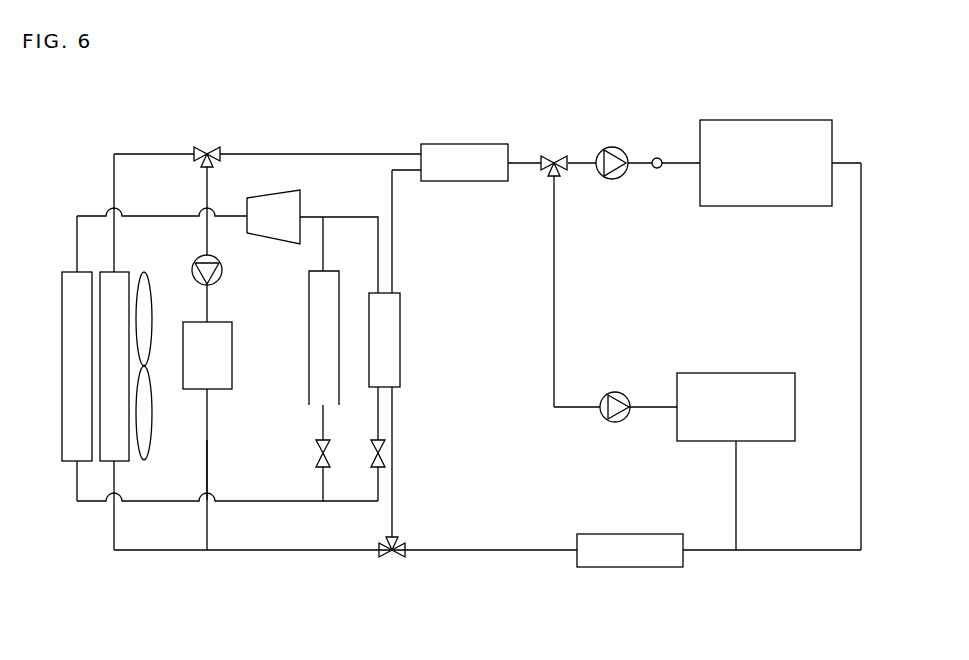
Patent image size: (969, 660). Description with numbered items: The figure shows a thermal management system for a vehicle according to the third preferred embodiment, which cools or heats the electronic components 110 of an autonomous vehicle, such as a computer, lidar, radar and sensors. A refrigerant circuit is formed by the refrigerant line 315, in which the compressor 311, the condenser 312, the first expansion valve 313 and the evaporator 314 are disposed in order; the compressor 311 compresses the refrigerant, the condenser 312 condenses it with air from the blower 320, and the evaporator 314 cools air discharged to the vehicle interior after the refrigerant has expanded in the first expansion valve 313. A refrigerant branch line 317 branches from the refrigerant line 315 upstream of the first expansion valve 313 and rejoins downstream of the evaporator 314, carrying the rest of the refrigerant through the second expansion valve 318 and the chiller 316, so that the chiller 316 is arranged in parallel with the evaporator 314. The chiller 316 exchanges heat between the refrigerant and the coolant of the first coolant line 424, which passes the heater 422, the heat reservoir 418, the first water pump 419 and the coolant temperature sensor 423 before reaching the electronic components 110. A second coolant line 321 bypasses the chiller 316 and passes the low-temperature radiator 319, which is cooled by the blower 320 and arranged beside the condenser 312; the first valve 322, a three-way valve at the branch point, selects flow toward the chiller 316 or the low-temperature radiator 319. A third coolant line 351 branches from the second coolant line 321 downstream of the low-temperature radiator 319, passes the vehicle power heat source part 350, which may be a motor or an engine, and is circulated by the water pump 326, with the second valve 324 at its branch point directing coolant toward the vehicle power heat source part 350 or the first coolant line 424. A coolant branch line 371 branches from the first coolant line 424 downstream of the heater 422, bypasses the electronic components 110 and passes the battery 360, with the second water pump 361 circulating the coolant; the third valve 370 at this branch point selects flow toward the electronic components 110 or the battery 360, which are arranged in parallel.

The electronic components 110 is at (770, 120).
The compressor 311 is at (272, 190).
The condenser 312 is at (68, 461).
The first expansion valve 313 is at (316, 450).
The evaporator 314 is at (309, 340).
The refrigerant line 315 is at (160, 216).
The chiller 316 is at (401, 340).
The refrigerant branch line 317 is at (341, 501).
The second expansion valve 318 is at (371, 455).
The low-temperature radiator 319 is at (125, 461).
The blower 320 is at (151, 455).
The second coolant line 321 is at (247, 550).
The first valve 322 is at (393, 558).
The second valve 324 is at (213, 148).
The water pump 326 is at (216, 281).
The vehicle power heat source part 350 is at (218, 389).
The third coolant line 351 is at (207, 482).
The battery 360 is at (737, 373).
The second water pump 361 is at (613, 421).
The third valve 370 is at (550, 156).
The coolant branch line 371 is at (554, 292).
The heat reservoir 418 is at (630, 567).
The first water pump 419 is at (608, 147).
The heater 422 is at (462, 144).
The coolant temperature sensor 423 is at (657, 158).
The first coolant line 424 is at (861, 510).